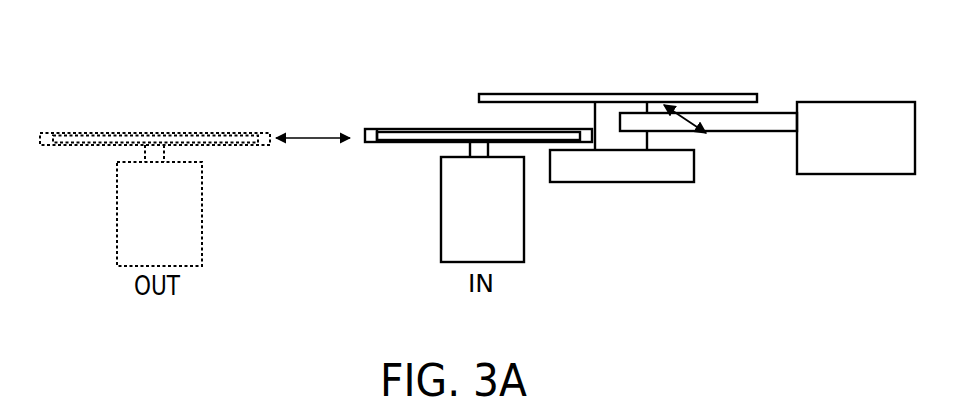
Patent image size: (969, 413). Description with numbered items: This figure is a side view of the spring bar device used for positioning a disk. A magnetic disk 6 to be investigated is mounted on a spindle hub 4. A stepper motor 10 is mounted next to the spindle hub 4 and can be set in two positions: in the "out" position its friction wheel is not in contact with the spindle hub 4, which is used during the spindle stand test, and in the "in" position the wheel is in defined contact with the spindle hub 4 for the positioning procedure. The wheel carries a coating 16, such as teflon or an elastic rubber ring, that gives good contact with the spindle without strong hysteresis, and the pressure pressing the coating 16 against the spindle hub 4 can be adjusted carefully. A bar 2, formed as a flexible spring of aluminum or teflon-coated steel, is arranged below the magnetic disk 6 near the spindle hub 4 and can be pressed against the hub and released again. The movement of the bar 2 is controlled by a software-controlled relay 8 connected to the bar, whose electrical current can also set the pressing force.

The bar 2 is at (754, 122).
The spindle hub 4 is at (617, 168).
The magnetic disk 6 is at (523, 98).
The relay 8 is at (843, 170).
The stepper motor 10 is at (448, 202).
The coating 16 is at (366, 133).